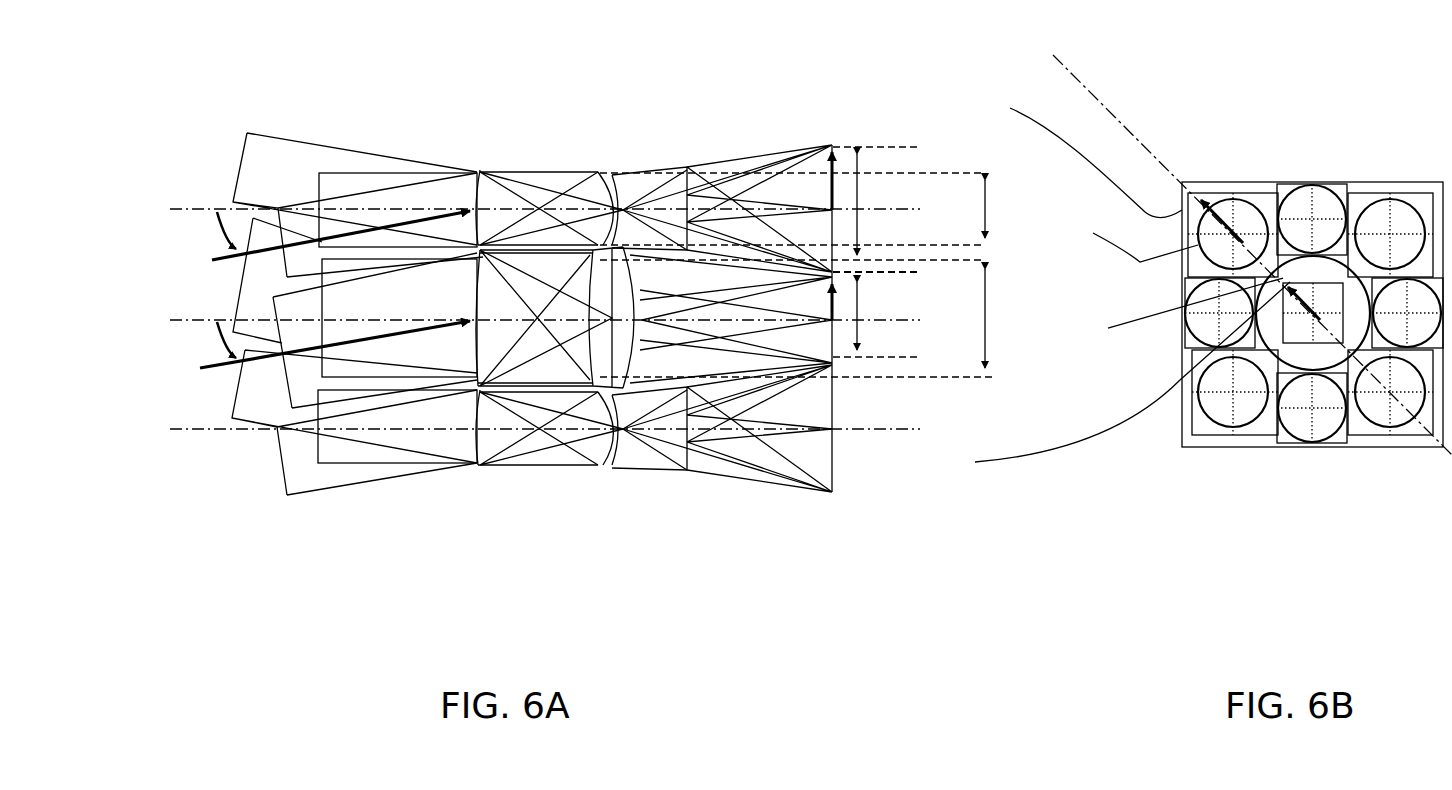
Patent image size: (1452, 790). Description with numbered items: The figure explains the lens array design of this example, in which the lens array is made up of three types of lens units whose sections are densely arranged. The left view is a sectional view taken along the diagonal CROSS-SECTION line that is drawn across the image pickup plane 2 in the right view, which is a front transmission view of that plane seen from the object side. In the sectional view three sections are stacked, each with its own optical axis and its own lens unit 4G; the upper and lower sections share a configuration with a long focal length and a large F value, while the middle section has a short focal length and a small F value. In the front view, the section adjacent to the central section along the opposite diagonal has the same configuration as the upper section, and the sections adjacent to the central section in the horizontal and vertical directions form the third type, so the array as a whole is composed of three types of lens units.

In FIG. 6B, the image sensor 2 is at (1200, 447).
In FIG. 6A, the lens group 4G is at (688, 148).
In FIG. 6B, the cross-section line CROSS-SECTION is at (1120, 108).